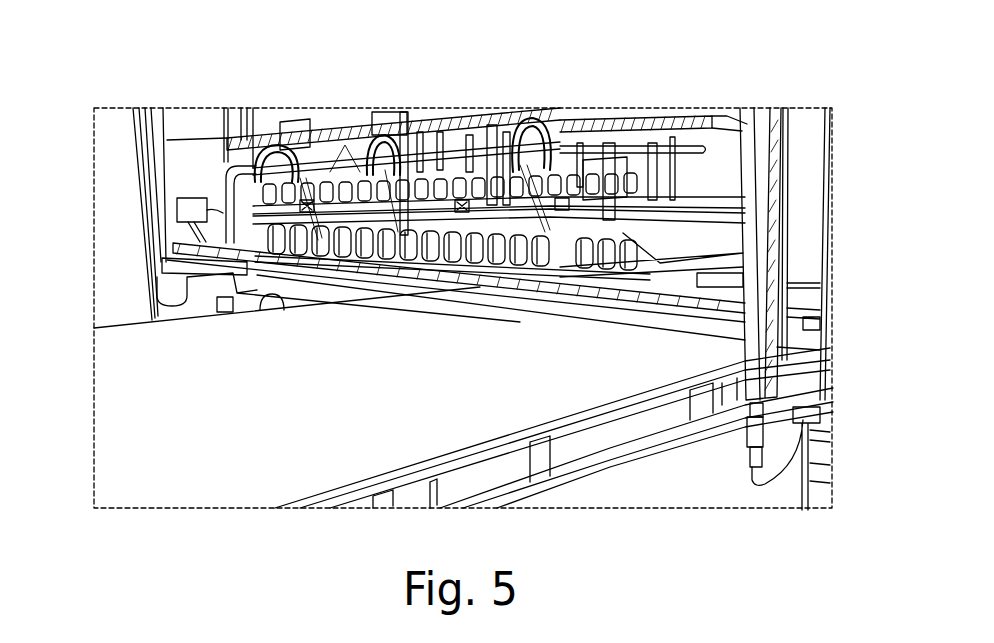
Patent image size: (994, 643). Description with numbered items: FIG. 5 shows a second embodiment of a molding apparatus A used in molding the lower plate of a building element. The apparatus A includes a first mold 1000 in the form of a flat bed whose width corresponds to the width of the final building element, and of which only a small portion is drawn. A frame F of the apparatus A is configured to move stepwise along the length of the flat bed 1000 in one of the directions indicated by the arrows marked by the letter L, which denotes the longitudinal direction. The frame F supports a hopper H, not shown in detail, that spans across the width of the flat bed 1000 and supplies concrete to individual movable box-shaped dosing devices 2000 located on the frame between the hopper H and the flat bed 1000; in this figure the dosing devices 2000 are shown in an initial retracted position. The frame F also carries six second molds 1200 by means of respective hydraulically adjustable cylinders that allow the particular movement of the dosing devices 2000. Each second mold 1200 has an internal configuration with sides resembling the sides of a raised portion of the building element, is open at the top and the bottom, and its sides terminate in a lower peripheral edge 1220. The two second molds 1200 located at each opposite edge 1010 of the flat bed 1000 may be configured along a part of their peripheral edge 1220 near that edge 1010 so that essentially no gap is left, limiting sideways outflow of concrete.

The first mold 1000 is at (283, 421).
The opposite edge of the flat bed 1010 is at (123, 322).
The second mold 1200 is at (468, 127).
The lower peripheral edge 1220 is at (547, 287).
The dosing device 2000 is at (723, 187).
The hopper H is at (259, 118).
The molding apparatus A is at (381, 86).
The frame F is at (761, 130).
The longitudinal direction L is at (656, 366).